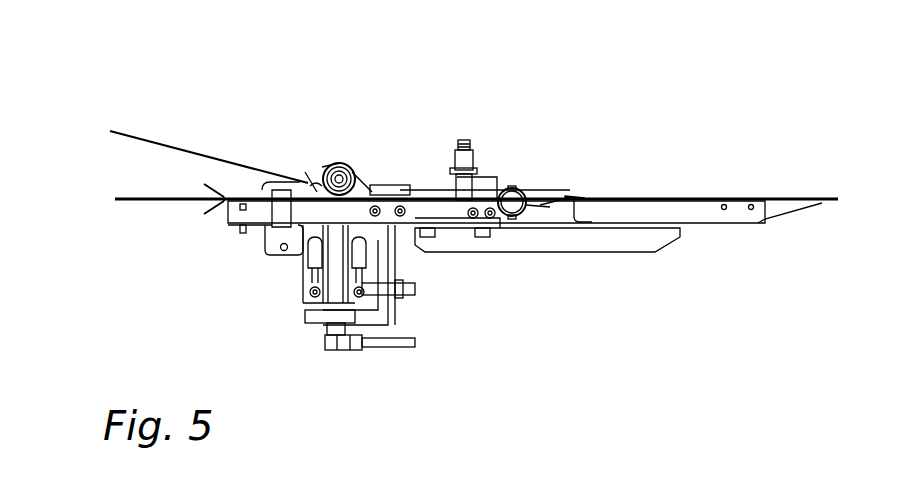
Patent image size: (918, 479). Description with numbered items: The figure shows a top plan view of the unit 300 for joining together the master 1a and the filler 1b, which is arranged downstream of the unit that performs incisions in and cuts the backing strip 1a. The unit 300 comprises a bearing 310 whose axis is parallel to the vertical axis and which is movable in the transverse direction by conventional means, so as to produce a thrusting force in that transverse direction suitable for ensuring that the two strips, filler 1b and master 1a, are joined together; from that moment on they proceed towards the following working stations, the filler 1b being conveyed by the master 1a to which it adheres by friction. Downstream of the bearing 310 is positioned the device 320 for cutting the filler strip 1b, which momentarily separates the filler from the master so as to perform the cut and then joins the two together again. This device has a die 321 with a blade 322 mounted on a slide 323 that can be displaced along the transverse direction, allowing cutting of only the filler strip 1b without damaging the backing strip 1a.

The master strip 1a is at (115, 199).
The filler strip 1b is at (148, 133).
The unit for joining together master and filler 300 is at (210, 262).
The bearing 310 is at (327, 166).
The device for cutting the filler strip 320 is at (445, 294).
The die 321 is at (382, 187).
The blade 322 is at (397, 188).
The slide 323 is at (384, 272).